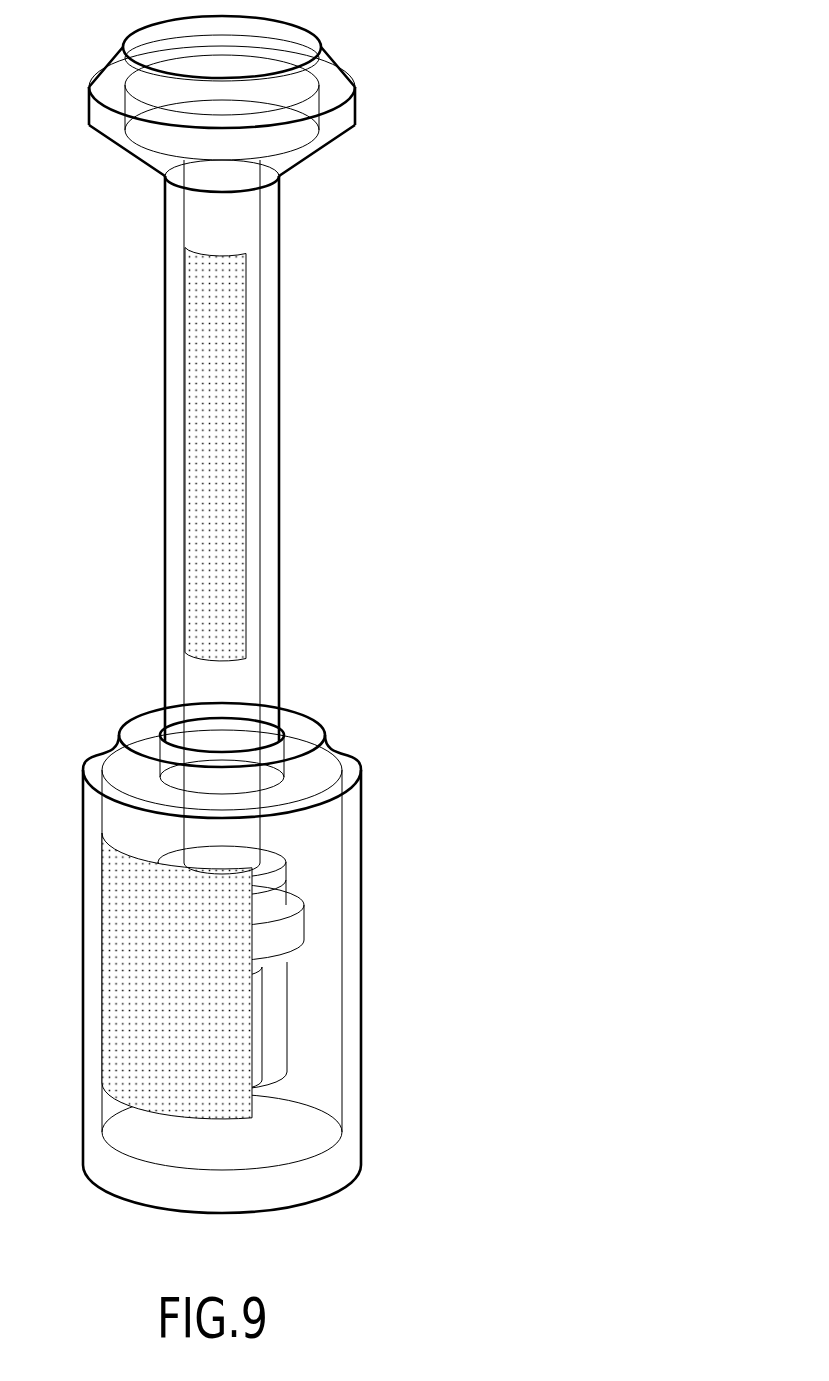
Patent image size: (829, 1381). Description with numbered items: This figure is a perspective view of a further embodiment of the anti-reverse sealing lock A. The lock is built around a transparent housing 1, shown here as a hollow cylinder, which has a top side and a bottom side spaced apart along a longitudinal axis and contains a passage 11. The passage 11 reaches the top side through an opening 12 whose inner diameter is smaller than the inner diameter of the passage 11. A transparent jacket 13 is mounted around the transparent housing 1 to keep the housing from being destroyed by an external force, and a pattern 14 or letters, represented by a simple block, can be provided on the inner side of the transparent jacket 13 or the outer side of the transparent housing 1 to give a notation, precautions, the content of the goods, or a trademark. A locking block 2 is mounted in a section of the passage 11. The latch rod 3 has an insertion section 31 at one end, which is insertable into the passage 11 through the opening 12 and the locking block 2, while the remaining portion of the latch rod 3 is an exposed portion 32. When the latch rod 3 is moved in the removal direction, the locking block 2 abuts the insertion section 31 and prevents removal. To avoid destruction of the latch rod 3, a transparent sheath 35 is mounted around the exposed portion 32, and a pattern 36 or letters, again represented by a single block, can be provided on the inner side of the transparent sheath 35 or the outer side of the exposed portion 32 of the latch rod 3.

The anti-reverse sealing lock A is at (284, 614).
The transparent housing 1 is at (343, 835).
The locking block 2 is at (310, 907).
The latch rod 3 is at (226, 445).
The passage 11 is at (287, 1047).
The opening 12 is at (220, 785).
The transparent jacket 13 is at (362, 992).
The pattern 14 is at (135, 982).
The insertion section 31 is at (260, 990).
The exposed portion 32 is at (260, 310).
The transparent sheath 35 is at (267, 572).
The pattern 36 is at (207, 522).